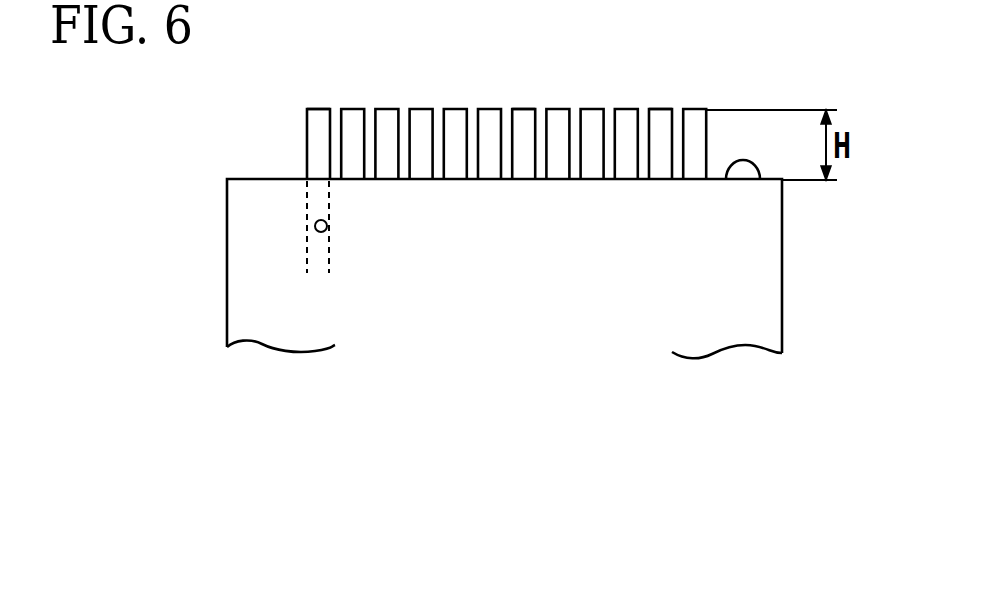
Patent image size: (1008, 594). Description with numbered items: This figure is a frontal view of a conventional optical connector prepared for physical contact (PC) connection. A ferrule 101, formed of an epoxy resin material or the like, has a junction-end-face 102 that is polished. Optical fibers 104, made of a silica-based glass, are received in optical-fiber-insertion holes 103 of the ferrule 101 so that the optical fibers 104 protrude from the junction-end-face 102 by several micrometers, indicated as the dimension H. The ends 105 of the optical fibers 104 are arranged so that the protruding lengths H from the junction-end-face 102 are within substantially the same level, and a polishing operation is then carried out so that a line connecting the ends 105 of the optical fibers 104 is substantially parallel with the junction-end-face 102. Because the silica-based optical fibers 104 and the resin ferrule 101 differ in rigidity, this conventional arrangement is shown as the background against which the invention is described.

The ferrule 101 is at (783, 295).
The junction-end-face 102 is at (763, 181).
The optical-fiber-insertion hole 103 is at (327, 232).
The optical fiber 104 is at (318, 133).
The end of optical fiber 105 is at (321, 108).